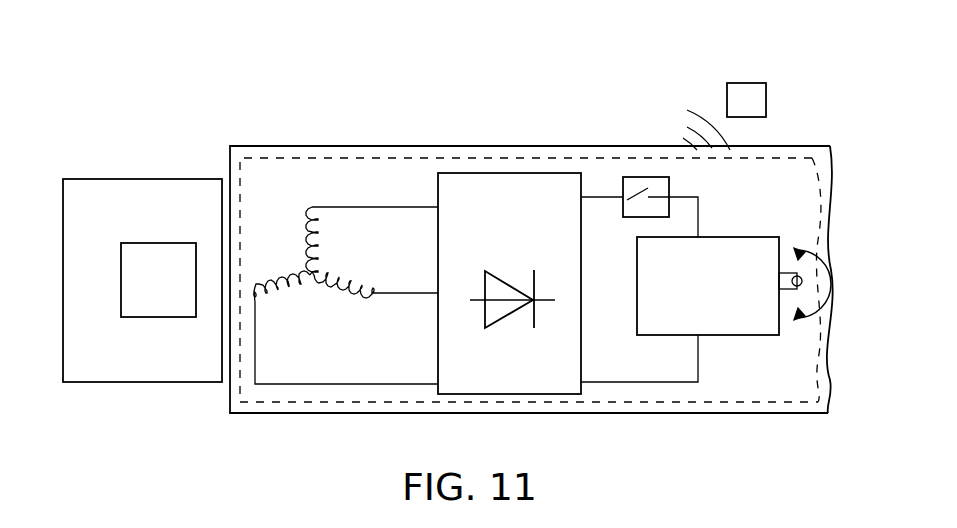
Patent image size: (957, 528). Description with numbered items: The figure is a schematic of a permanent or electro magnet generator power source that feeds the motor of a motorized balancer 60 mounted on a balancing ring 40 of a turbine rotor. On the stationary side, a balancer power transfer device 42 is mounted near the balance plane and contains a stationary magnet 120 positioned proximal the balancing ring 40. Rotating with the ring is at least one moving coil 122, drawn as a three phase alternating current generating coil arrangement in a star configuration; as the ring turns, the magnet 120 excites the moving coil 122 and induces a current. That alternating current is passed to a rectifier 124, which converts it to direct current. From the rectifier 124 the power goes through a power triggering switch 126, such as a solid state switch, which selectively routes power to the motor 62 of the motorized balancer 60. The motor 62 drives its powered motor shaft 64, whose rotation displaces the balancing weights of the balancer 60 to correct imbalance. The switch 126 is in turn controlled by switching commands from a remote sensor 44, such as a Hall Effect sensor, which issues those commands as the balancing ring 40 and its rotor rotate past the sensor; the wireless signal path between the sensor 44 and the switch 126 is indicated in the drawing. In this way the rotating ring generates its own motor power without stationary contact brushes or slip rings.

The balancing ring 40 is at (592, 98).
The balancer power transfer device 42 is at (157, 178).
The remote sensor 44 is at (750, 95).
The motorized balancer 60 is at (782, 145).
The motor 62 is at (740, 240).
The motor shaft 64 is at (787, 282).
The stationary magnet 120 is at (140, 318).
The moving coil 122 is at (287, 212).
The rectifier 124 is at (500, 210).
The power triggering switch 126 is at (652, 178).